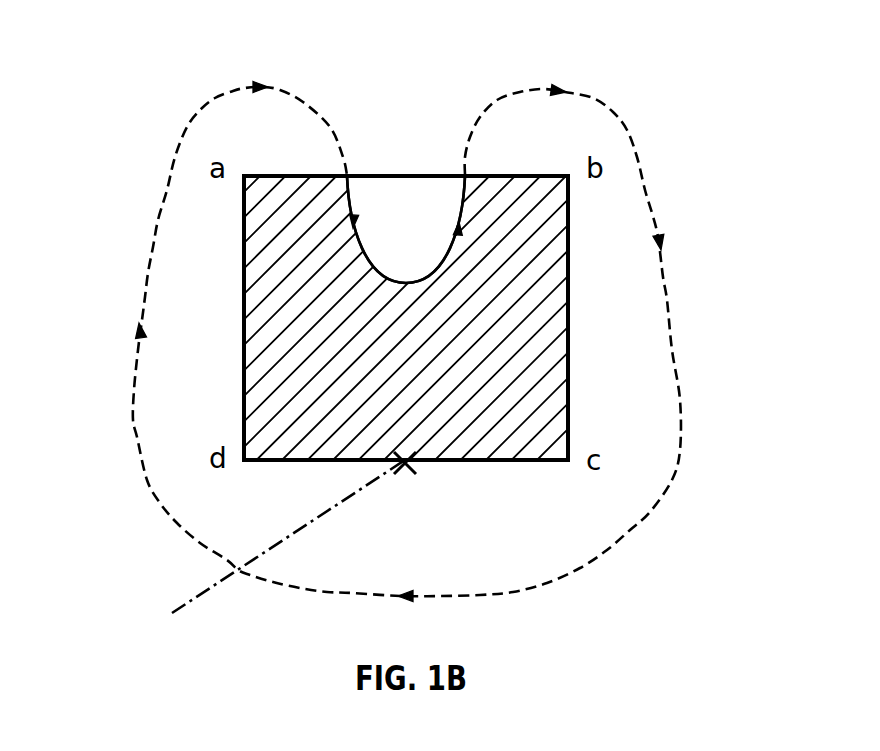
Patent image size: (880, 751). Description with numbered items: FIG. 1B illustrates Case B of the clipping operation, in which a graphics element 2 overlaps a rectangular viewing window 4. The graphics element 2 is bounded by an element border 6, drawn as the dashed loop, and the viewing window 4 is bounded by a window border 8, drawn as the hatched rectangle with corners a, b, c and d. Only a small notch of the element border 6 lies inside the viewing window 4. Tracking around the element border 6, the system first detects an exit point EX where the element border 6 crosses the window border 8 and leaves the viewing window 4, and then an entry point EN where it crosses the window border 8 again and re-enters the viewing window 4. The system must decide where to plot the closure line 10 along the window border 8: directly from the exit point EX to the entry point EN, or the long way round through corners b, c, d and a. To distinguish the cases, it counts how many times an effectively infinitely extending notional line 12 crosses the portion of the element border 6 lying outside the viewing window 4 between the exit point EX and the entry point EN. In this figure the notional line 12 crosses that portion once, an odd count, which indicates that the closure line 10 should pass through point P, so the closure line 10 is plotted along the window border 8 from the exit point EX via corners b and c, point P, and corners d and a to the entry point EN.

The graphics element 2 is at (608, 93).
The viewing window 4 is at (163, 410).
The element border 6 is at (657, 232).
The window border 8 is at (241, 355).
The closure line 10 is at (569, 358).
The notional line 12 is at (190, 597).
The point P is at (411, 477).
The entry point EN is at (343, 173).
The exit point EX is at (465, 173).